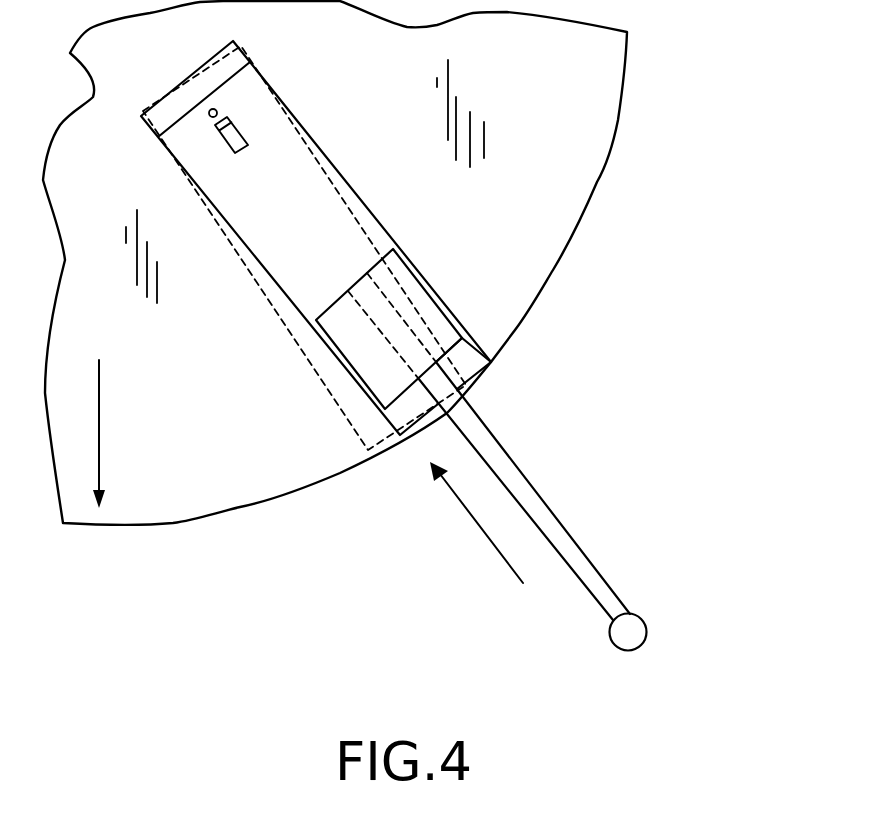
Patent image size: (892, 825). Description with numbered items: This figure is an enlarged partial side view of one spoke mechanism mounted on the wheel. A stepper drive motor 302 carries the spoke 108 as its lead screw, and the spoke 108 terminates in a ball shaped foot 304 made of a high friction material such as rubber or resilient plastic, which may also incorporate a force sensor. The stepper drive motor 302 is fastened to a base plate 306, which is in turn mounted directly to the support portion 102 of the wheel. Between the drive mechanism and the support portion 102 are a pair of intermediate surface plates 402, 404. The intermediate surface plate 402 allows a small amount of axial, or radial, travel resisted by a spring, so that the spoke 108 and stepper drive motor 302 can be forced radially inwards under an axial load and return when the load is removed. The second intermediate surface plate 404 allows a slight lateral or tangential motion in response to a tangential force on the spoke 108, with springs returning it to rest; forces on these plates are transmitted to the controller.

The support portion 102 is at (597, 183).
The stepper drive motor 302 is at (326, 348).
The base plate 306 is at (343, 413).
The intermediate surface plate 402 is at (423, 298).
The second intermediate surface plate 404 is at (470, 340).
The spoke 108 is at (565, 555).
The ball shaped foot 304 is at (637, 628).